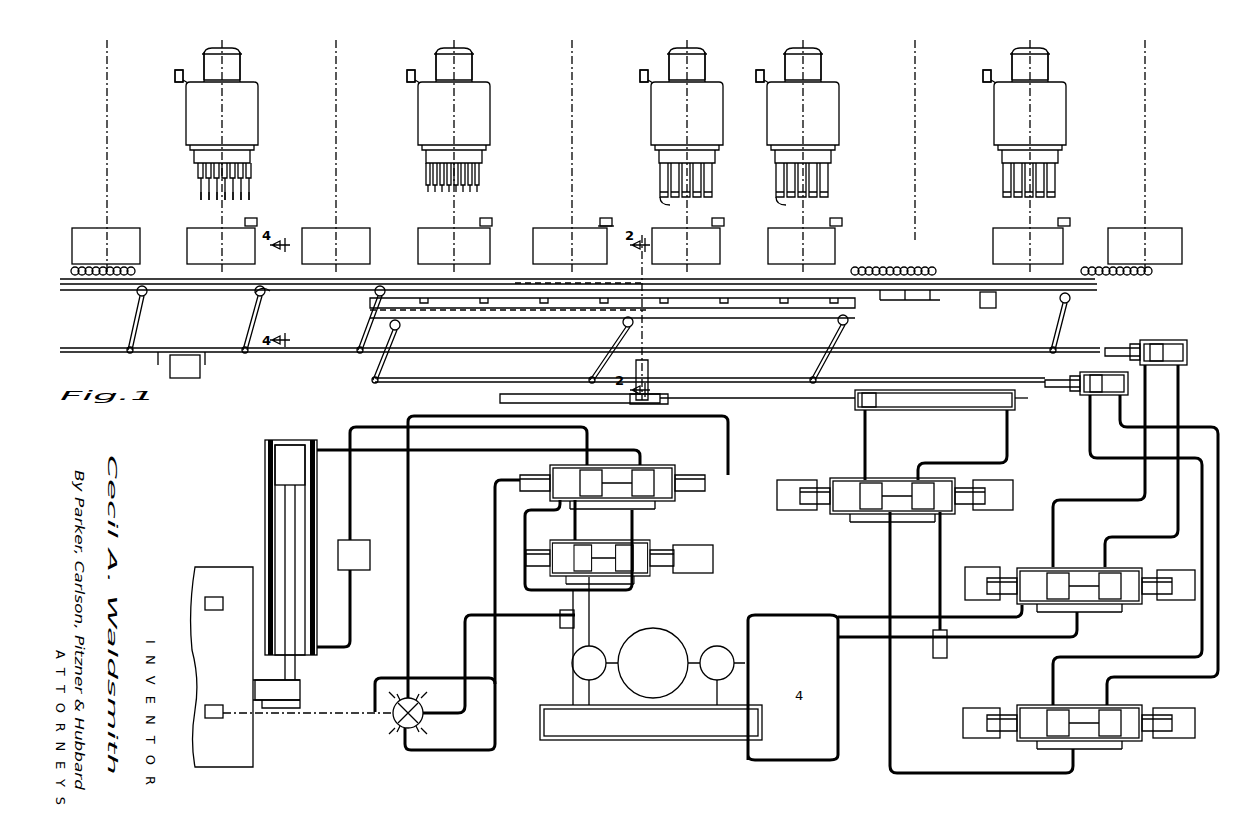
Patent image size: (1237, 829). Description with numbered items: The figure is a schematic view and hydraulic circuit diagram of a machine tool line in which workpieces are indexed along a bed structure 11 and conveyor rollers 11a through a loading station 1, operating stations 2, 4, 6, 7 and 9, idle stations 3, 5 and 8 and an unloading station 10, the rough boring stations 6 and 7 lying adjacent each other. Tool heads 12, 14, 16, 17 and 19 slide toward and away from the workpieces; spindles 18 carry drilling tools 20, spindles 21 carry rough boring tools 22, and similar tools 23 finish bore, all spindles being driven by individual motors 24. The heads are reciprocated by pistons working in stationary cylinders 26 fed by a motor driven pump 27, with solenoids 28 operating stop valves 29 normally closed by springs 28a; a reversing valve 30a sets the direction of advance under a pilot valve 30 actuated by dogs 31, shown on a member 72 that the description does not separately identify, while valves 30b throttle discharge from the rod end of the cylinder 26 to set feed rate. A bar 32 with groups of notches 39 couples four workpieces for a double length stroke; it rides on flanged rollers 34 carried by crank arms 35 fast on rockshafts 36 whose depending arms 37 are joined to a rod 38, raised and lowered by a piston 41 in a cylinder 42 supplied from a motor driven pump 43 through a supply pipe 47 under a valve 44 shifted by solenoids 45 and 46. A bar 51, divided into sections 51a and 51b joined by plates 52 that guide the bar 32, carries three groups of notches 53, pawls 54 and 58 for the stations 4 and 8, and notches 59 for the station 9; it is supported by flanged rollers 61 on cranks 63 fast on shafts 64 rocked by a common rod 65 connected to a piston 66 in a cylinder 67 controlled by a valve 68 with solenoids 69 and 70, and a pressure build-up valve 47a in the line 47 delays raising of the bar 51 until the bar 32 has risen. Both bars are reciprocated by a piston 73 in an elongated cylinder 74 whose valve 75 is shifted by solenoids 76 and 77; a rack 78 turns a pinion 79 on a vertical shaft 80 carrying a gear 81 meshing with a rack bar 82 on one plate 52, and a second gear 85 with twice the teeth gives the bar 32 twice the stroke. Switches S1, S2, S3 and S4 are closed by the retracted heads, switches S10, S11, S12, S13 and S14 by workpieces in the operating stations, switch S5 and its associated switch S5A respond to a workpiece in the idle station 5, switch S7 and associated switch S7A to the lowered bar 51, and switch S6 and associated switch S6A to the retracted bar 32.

The loading station 1 is at (105, 147).
The operating station 2 is at (220, 147).
The idle station 3 is at (334, 147).
The operating station 4 is at (452, 147).
The idle station 5 is at (570, 147).
The operating station 6 is at (685, 147).
The operating station 7 is at (801, 147).
The idle station 8 is at (913, 131).
The operating station 9 is at (1028, 147).
The unloading station 10 is at (1143, 147).
The bed structure 11 is at (995, 265).
The conveyor rollers 11a is at (1200, 262).
The tool head 12 is at (200, 118).
The tool head 14 is at (432, 118).
The tool head 16 is at (665, 118).
The tool head 17 is at (781, 118).
The spindles 18 is at (250, 168).
The tool head 19 is at (1008, 122).
The drilling tools 20 is at (200, 190).
The spindles 21 is at (816, 178).
The tools 22 is at (736, 205).
The tools 23 is at (1010, 197).
The motors 24 is at (1062, 70).
The cylinders 26 is at (264, 505).
The motor driven pump 27 is at (600, 655).
The solenoids 28 is at (700, 575).
The springs 28a is at (652, 548).
The stop valves 29 is at (615, 585).
The pilot valve 30 is at (395, 727).
The reversing valve 30a is at (655, 462).
The valves 30b is at (365, 548).
The dogs 31 is at (232, 728).
The bar 32 is at (535, 315).
The flanged rollers 34 is at (862, 326).
The crank arms 35 is at (845, 330).
The rockshafts 36 is at (835, 322).
The depending arms 37 is at (832, 370).
The rod 38 is at (405, 385).
The notches 39 is at (780, 300).
The piston 41 is at (1098, 396).
The cylinder 42 is at (1095, 368).
The motor driven pump 43 is at (722, 648).
The valve 44 is at (1037, 700).
The solenoid 45 is at (980, 705).
The solenoid 46 is at (1185, 738).
The supply pipe 47 is at (790, 645).
The pressure build-up valve 47a is at (935, 660).
The bar 51 is at (222, 292).
The longitudinal section 51a is at (150, 265).
The longitudinal section 51b is at (972, 260).
The plates 52 is at (935, 300).
The notches 53 is at (380, 252).
The pawls 54 is at (470, 265).
The pawls 58 is at (905, 265).
The notches 59 is at (1062, 280).
The flanged rollers 61 is at (272, 298).
The cranks 63 is at (275, 312).
The shafts 64 is at (255, 296).
The rod 65 is at (312, 352).
The piston 66 is at (1155, 338).
The cylinder 67 is at (1168, 366).
The valve 68 is at (1040, 565).
The solenoid 69 is at (975, 565).
The solenoid 70 is at (1180, 600).
The plate 72 is at (235, 565).
The piston 73 is at (870, 410).
The elongated cylinder 74 is at (940, 415).
The valve 75 is at (880, 476).
The solenoid 76 is at (1012, 490).
The solenoid 77 is at (800, 510).
The rack 78 is at (528, 392).
The pinion 79 is at (660, 392).
The vertical shaft 80 is at (650, 348).
The gear 81 is at (632, 317).
The rack bar 82 is at (535, 280).
The second gear 85 is at (274, 468).
The switch S1 is at (175, 82).
The switch S2 is at (407, 82).
The switch S3 is at (756, 78).
The switch S4 is at (983, 78).
The switch S5 is at (606, 218).
The switch S5A is at (605, 209).
The switch S6 is at (996, 308).
The switch S6A is at (1021, 329).
The switch S7 is at (185, 378).
The switch S7A is at (201, 403).
The switch S10 is at (252, 218).
The switch S11 is at (487, 218).
The switch S12 is at (719, 218).
The switch S13 is at (837, 218).
The switch S14 is at (1065, 218).